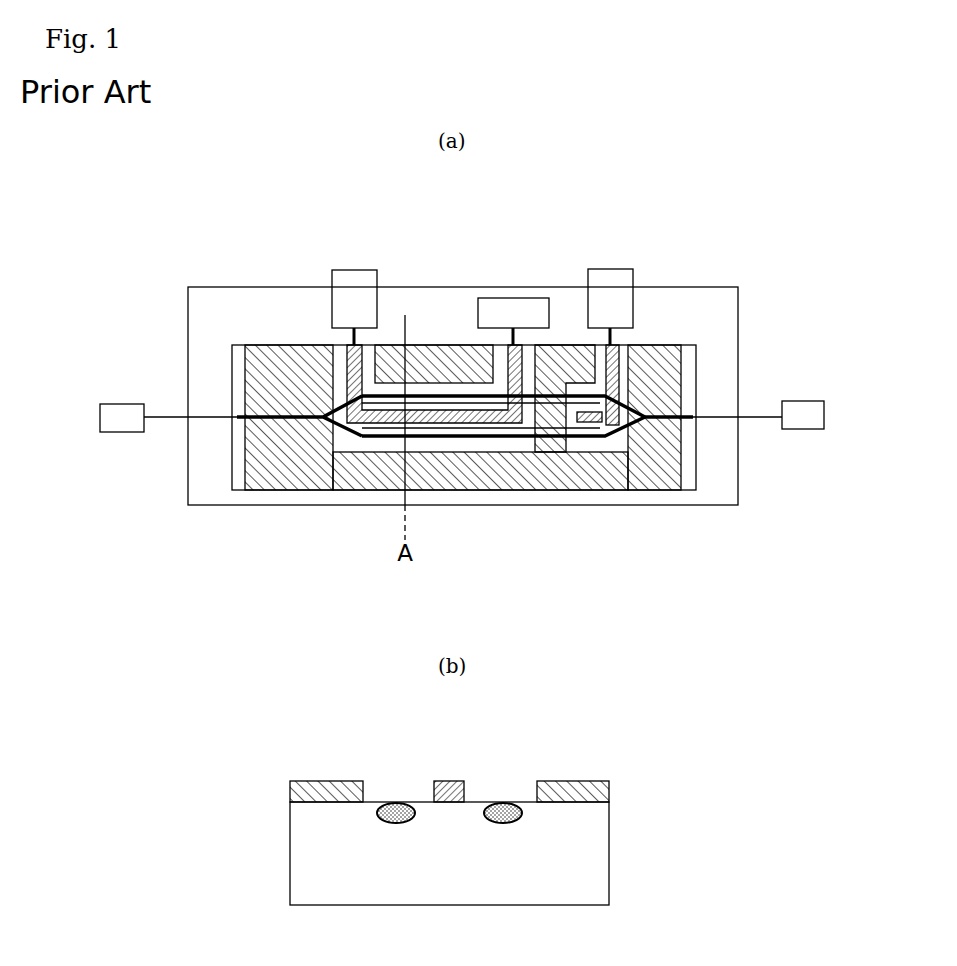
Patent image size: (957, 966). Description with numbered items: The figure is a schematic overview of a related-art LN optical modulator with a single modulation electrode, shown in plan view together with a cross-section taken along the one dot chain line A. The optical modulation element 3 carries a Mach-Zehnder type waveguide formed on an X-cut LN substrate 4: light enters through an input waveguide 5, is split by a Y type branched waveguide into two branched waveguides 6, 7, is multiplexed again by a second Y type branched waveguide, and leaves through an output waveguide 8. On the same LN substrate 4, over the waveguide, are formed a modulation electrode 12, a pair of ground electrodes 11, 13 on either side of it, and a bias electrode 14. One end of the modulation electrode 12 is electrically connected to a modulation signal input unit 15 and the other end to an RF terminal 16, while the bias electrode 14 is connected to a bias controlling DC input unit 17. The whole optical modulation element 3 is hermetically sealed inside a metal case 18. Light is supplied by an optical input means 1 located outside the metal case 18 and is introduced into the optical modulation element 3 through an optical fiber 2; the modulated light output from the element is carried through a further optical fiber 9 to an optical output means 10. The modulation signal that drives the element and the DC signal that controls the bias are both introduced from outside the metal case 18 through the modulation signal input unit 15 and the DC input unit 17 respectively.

The optical input means 1 is at (122, 435).
The optical fiber 2 is at (167, 415).
The optical modulation element 3 is at (274, 343).
The LN substrate 4 is at (228, 462).
The input waveguide 5 is at (287, 427).
The branched waveguide 6 is at (480, 438).
The branched waveguide 7 is at (475, 390).
The output waveguide 8 is at (667, 463).
The optical fiber 9 is at (723, 417).
The optical output means 10 is at (803, 398).
The ground electrode 11 is at (365, 477).
The modulation electrode 12 is at (495, 421).
The ground electrode 13 is at (435, 343).
The bias electrode 14 is at (588, 422).
The modulation signal input unit 15 is at (352, 283).
The RF terminal 16 is at (513, 312).
The DC input unit 17 is at (613, 285).
The metal case 18 is at (680, 287).